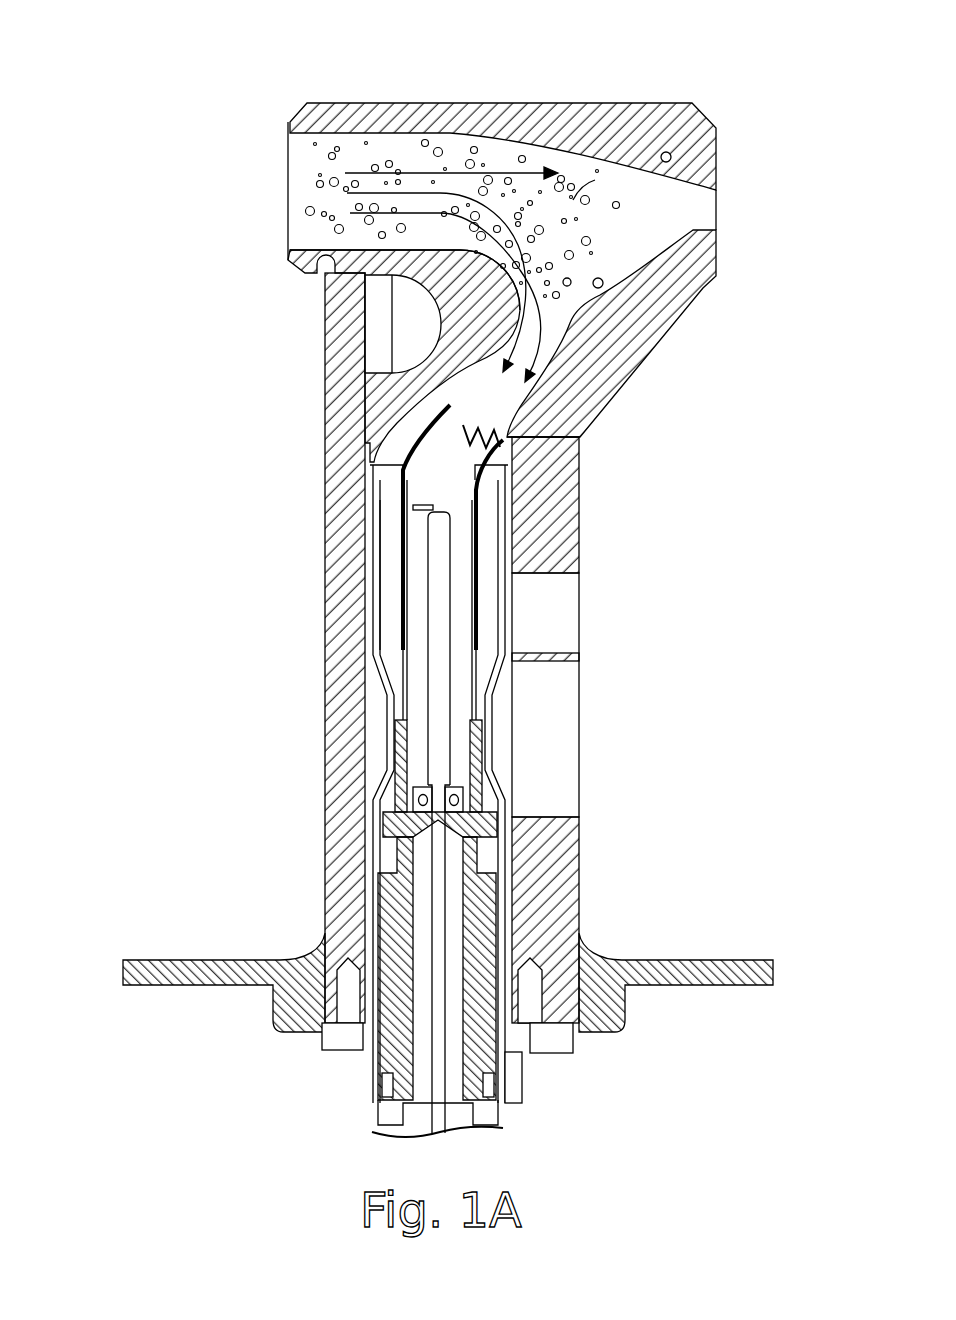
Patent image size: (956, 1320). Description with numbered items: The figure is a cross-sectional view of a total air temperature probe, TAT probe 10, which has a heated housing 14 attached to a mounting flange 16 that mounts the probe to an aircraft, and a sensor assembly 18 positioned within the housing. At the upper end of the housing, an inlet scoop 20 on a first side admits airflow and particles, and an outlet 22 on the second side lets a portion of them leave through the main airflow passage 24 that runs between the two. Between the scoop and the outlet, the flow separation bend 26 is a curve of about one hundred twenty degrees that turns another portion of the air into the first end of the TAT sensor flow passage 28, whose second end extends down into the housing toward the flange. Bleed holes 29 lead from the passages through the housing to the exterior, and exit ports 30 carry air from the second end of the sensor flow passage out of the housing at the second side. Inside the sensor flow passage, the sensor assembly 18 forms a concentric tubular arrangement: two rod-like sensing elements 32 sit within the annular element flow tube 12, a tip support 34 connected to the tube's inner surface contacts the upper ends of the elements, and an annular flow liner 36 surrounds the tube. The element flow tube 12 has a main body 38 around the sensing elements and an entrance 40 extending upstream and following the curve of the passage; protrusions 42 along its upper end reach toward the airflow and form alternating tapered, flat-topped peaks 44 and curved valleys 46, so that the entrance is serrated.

The TAT probe 10 is at (136, 76).
The element flow tube 12 is at (492, 530).
The housing 14 is at (466, 563).
The mounting flange 16 is at (188, 972).
The sensor assembly 18 is at (345, 612).
The inlet scoop 20 is at (320, 215).
The outlet 22 is at (703, 208).
The main airflow passage 24 is at (468, 150).
The flow separation bend 26 is at (505, 295).
The TAT sensor flow passage 28 is at (550, 358).
The bleed holes 29 is at (570, 279).
The exit ports 30 is at (553, 637).
The sensing elements 32 is at (440, 583).
The tip support 34 is at (423, 511).
The flow liner 36 is at (505, 617).
The main body 38 is at (410, 553).
The entrance 40 is at (440, 432).
The protrusions 42 is at (440, 410).
The peaks 44 is at (583, 437).
The valleys 46 is at (487, 443).